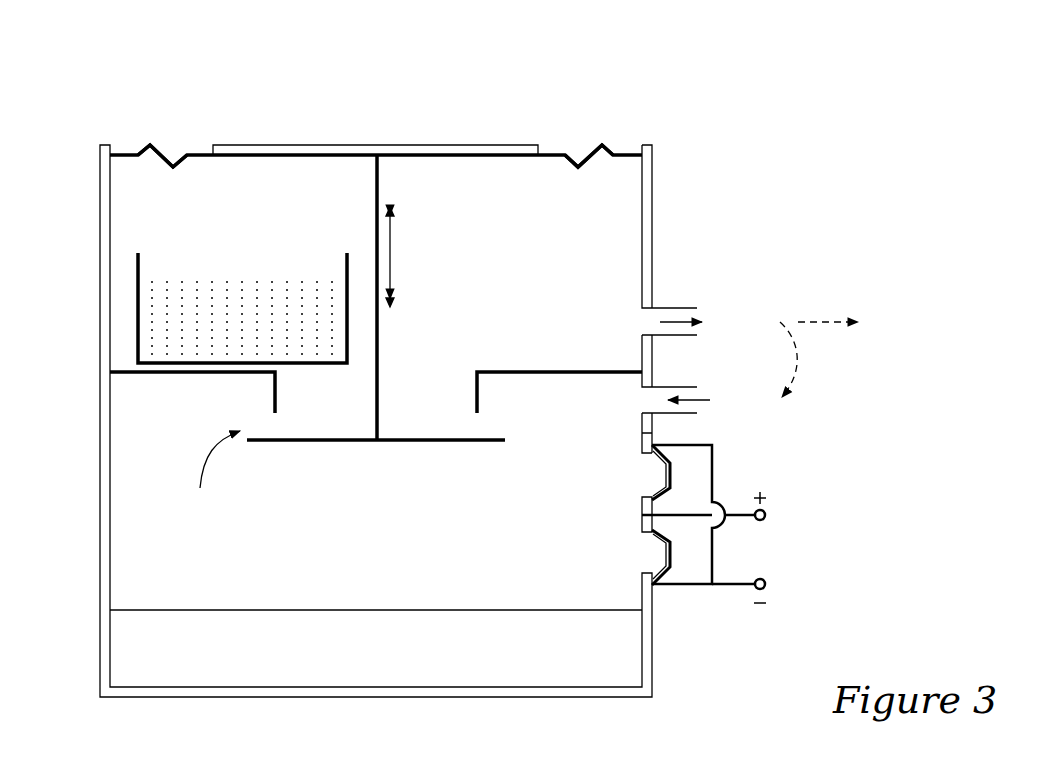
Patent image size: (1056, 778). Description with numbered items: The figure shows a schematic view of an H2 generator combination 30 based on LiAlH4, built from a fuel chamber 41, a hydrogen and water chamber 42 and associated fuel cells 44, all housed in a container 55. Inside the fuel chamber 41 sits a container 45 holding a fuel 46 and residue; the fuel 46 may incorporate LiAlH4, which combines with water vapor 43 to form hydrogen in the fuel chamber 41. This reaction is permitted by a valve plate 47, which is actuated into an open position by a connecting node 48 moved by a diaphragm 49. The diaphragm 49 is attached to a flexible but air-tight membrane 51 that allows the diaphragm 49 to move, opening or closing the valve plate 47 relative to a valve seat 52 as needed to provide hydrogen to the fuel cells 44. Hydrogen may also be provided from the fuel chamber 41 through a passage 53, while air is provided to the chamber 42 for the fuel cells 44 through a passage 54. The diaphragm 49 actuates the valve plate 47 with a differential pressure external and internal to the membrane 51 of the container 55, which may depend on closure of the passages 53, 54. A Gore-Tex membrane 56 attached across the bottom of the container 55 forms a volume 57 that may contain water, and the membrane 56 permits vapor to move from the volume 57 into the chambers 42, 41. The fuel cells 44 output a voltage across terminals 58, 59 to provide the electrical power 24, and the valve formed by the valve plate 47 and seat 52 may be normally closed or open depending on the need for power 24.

The H2 generator combination 30 is at (750, 123).
The power 24 is at (847, 443).
The fuel chamber 41 is at (263, 228).
The hydrogen and water chamber 42 is at (390, 544).
The water vapor 43 is at (206, 462).
The fuel cells 44 is at (660, 478).
The container 45 is at (298, 363).
The fuel 46 is at (228, 278).
The valve plate 47 is at (422, 441).
The connecting node 48 is at (377, 345).
The diaphragm 49 is at (377, 143).
The flexible air-tight membrane 51 is at (150, 144).
The valve seat 52 is at (273, 412).
The passage 53 is at (673, 308).
The passage 54 is at (673, 387).
The container 55 is at (653, 227).
The Gore-Tex membrane 56 is at (213, 609).
The volume 57 is at (390, 661).
The terminal 58 is at (765, 518).
The terminal 59 is at (765, 588).